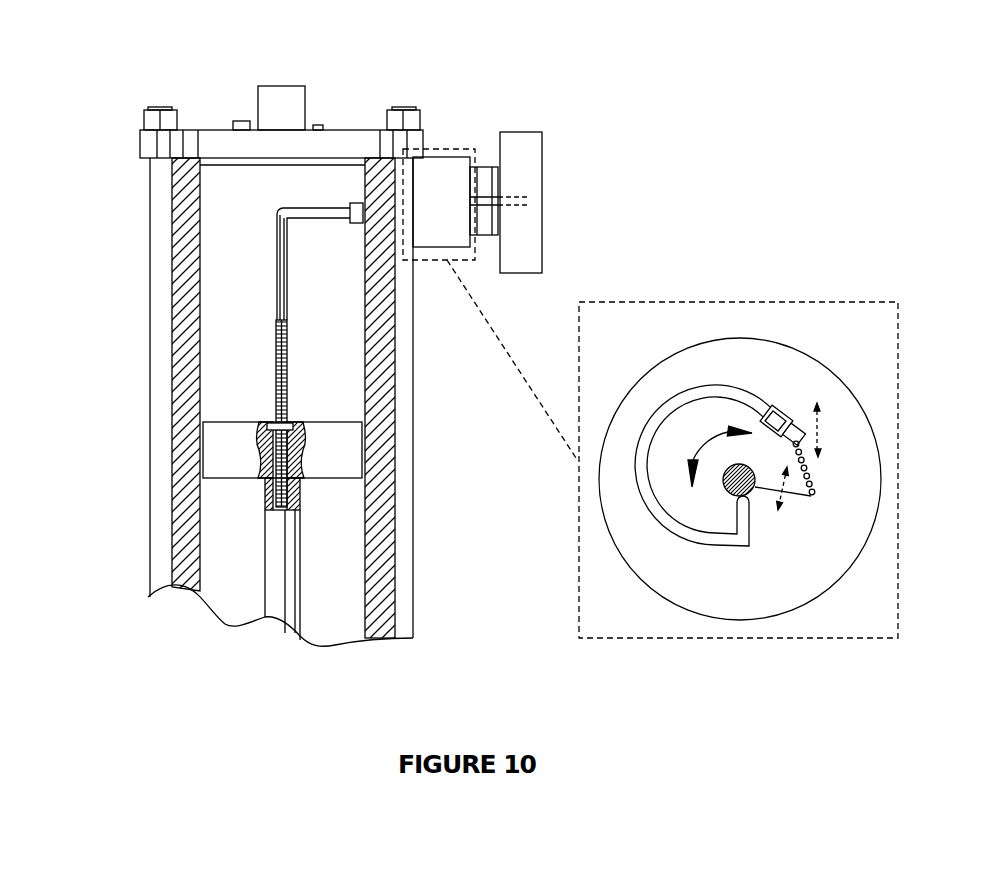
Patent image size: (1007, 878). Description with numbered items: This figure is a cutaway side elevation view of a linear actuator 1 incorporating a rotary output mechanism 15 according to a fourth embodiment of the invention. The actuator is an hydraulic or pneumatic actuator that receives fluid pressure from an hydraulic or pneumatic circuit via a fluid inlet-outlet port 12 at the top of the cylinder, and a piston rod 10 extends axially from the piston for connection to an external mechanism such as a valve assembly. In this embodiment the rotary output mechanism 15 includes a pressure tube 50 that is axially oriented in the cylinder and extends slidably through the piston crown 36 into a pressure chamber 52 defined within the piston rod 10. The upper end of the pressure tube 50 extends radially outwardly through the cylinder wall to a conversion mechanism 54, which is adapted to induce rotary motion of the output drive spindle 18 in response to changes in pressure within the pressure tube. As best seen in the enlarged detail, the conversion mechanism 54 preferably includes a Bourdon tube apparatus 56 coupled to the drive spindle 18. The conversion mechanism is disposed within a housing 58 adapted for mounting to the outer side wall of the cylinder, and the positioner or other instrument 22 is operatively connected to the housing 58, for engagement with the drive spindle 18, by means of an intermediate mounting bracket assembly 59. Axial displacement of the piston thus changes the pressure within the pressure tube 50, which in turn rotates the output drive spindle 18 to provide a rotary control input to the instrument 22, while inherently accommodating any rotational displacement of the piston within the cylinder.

The linear actuator 1 is at (128, 227).
The piston rod 10 is at (277, 577).
The fluid inlet-outlet port 12 is at (273, 100).
The rotary output mechanism 15 is at (300, 270).
The output drive spindle 18 is at (523, 200).
The instrument 22 is at (532, 138).
The piston crown 36 is at (228, 421).
The pressure tube 50 is at (303, 211).
The pressure chamber 52 is at (302, 498).
The conversion mechanism 54 is at (865, 415).
The Bourdon tube apparatus 56 is at (732, 375).
The housing 58 is at (448, 178).
The intermediate mounting bracket assembly 59 is at (482, 237).